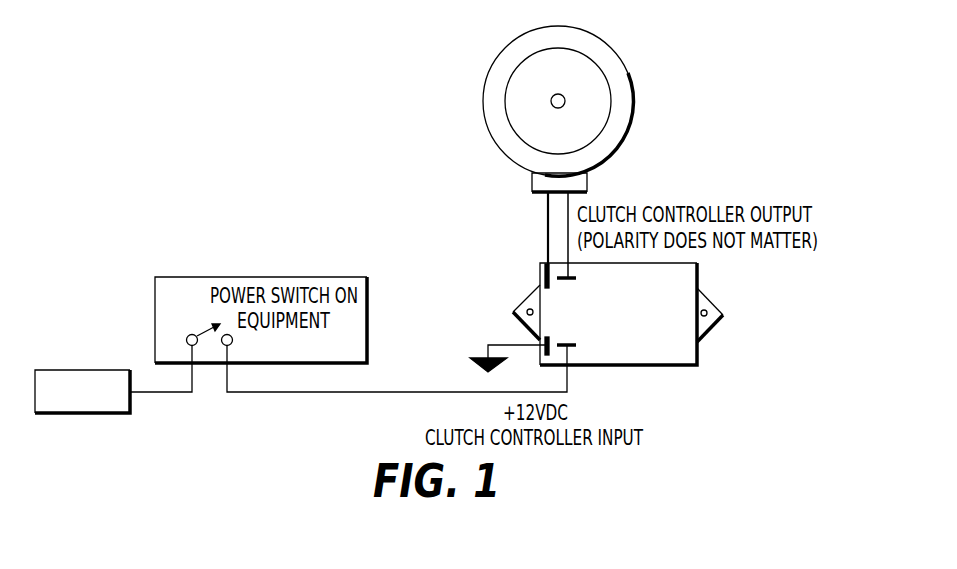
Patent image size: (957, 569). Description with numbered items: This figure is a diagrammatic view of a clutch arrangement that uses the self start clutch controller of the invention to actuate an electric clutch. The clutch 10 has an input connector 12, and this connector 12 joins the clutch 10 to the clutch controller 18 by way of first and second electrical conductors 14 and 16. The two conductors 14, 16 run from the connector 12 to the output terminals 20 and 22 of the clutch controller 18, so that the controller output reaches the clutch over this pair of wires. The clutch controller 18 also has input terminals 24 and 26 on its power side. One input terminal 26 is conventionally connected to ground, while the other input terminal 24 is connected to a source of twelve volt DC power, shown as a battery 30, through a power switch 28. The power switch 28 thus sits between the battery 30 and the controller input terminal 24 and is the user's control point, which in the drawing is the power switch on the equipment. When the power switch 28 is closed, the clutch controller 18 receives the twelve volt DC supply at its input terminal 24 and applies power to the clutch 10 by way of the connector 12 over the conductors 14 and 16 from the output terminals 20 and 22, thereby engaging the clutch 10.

The clutch 10 is at (628, 82).
The input connector 12 is at (587, 178).
The first electrical conductor 14 is at (546, 234).
The second electrical conductor 16 is at (566, 206).
The clutch controller 18 is at (700, 278).
The output terminal 20 is at (578, 277).
The output terminal 22 is at (545, 277).
The input terminal 24 is at (578, 347).
The input terminal 26 is at (533, 325).
The power switch 28 is at (200, 333).
The battery 30 is at (52, 370).